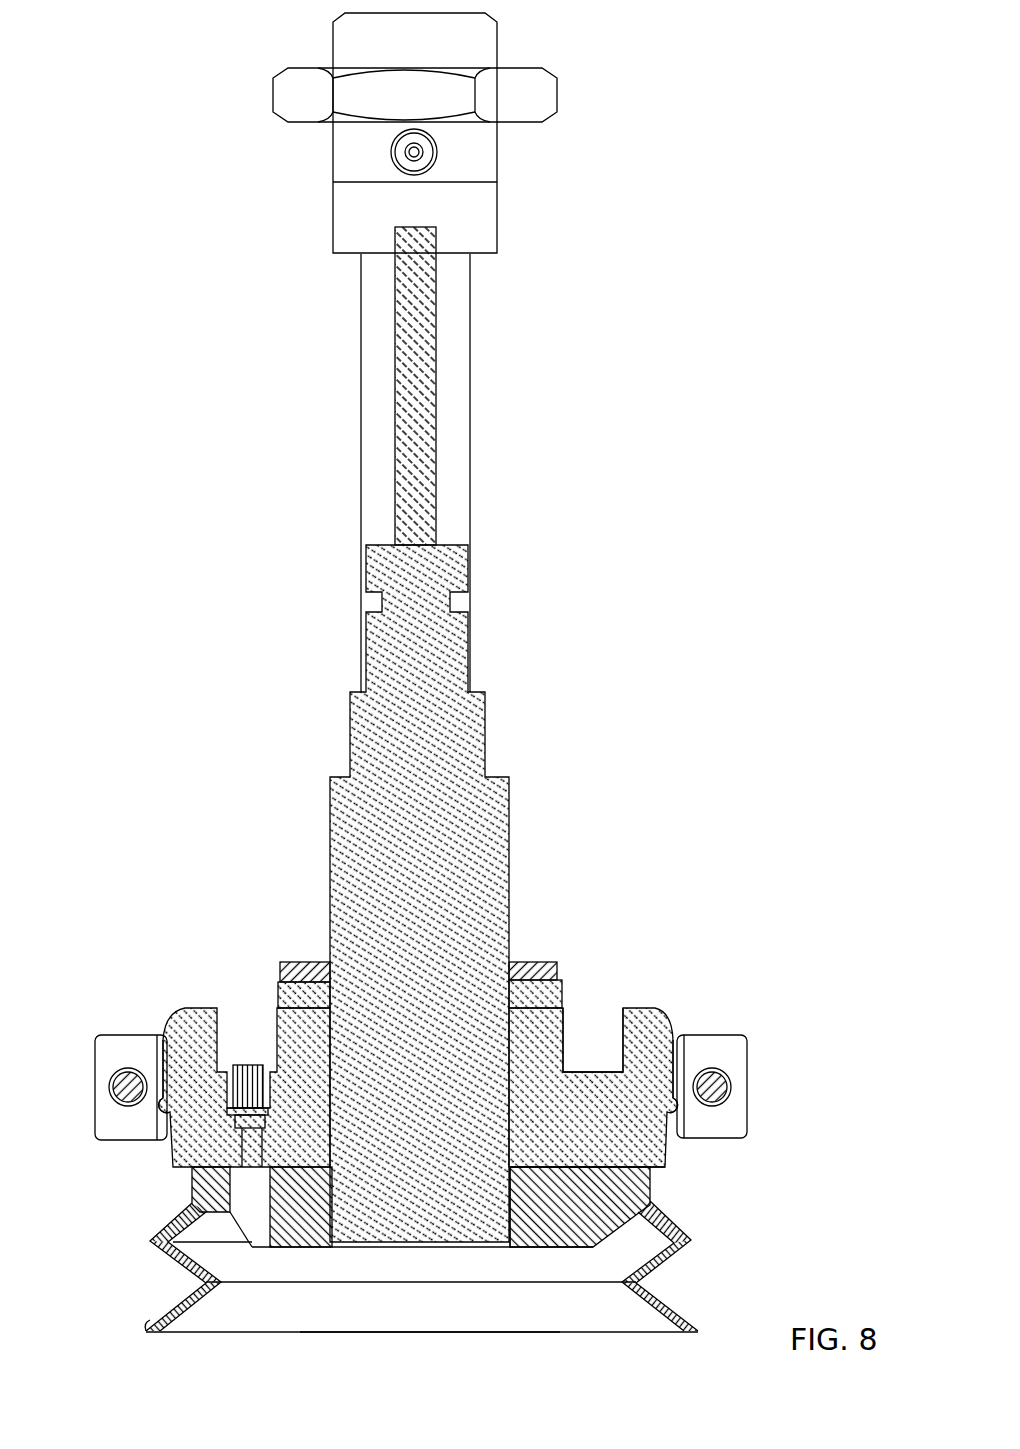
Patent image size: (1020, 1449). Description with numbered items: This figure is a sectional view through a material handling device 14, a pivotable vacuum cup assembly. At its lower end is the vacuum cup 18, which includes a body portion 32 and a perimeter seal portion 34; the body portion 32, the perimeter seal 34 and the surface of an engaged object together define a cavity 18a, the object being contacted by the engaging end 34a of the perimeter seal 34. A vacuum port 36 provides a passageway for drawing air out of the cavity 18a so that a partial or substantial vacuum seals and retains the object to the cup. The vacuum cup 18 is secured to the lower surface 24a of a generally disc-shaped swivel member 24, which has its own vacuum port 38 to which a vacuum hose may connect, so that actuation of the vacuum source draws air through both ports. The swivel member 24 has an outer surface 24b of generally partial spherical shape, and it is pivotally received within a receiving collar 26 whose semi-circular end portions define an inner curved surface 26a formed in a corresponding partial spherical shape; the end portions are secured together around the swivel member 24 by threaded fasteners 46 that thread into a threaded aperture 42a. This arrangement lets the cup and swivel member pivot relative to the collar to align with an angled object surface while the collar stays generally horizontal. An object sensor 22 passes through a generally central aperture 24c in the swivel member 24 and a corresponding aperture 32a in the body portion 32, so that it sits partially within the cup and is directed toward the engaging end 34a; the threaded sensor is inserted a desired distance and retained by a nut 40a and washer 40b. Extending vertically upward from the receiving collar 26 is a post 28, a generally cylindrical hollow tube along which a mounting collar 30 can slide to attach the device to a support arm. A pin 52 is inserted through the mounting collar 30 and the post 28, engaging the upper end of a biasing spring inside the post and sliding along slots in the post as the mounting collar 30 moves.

The material handling device 14 is at (684, 238).
The vacuum cup 18 is at (686, 1278).
The cavity 18a is at (422, 1302).
The object sensor 22 is at (495, 840).
The swivel member 24 is at (648, 1020).
The lower surface 24a is at (603, 1167).
The outer surface 24b is at (160, 1062).
The aperture 24c is at (508, 1043).
The receiving collar 26 is at (756, 1028).
The inner curved surface 26a is at (176, 1104).
The post 28 is at (358, 404).
The mounting collar 30 is at (560, 66).
The body portion 32 is at (632, 1190).
The aperture 32a is at (512, 1208).
The perimeter seal portion 34 is at (172, 1302).
The engaging end 34a is at (150, 1333).
The vacuum port 36 is at (247, 1193).
The vacuum port 38 is at (250, 1078).
The nut 40a is at (531, 972).
The washer 40b is at (557, 990).
The threaded aperture 42a is at (128, 1075).
The threaded fastener 46 is at (126, 1086).
The pin 52 is at (420, 152).